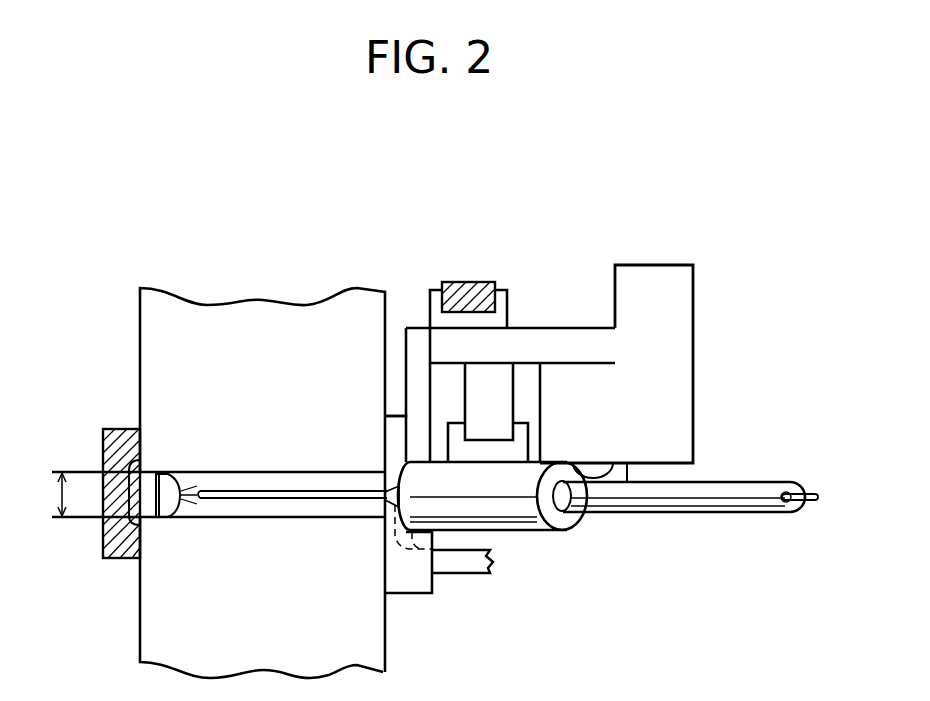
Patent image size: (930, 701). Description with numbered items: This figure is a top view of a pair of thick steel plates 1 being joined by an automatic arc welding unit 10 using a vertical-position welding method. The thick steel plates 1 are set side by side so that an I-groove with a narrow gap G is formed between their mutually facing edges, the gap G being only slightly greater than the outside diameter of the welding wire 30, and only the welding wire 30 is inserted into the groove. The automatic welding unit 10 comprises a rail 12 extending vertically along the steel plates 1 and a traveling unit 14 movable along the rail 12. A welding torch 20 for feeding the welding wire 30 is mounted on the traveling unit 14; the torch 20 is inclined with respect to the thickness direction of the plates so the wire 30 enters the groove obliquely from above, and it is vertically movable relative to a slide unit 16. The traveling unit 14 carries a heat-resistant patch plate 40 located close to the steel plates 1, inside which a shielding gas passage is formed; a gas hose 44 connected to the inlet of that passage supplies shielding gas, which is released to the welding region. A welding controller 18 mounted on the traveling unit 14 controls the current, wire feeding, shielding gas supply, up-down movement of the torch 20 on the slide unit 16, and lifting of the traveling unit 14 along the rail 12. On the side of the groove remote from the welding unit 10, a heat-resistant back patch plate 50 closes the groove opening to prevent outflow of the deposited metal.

The thick steel plate 1 is at (158, 350).
The automatic arc welding unit 10 is at (601, 373).
The rail 12 is at (470, 282).
The traveling unit 14 is at (552, 326).
The slide unit 16 is at (450, 393).
The welding controller 18 is at (667, 382).
The welding torch 20 is at (528, 535).
The welding wire 30 is at (287, 491).
The patch plate 40 is at (403, 592).
The gas hose 44 is at (456, 561).
The back patch plate 50 is at (115, 545).
The gap G is at (51, 494).